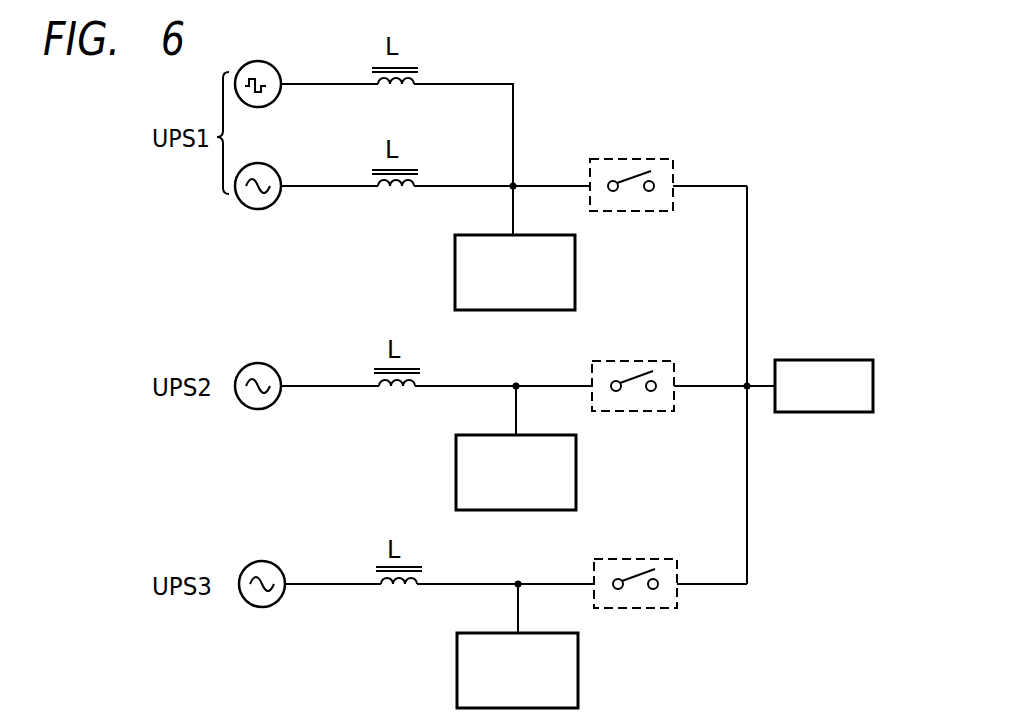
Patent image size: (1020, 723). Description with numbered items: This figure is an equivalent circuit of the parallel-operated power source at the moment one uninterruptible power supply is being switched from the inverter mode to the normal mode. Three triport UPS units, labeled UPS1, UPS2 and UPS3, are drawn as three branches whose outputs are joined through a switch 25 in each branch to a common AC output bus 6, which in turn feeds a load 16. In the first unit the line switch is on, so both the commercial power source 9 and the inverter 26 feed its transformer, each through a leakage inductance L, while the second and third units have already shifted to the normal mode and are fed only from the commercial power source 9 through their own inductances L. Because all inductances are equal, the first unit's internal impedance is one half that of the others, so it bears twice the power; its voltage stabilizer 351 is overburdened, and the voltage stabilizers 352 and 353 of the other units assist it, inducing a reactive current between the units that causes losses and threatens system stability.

The inverter 26 is at (263, 61).
The AC commercial power source 9 is at (263, 163).
The switch 25 is at (643, 160).
The voltage stabilizer 351 is at (575, 265).
The voltage stabilizer 352 is at (576, 463).
The voltage stabilizer 353 is at (578, 667).
The AC output bus 6 is at (747, 507).
The load 16 is at (825, 360).